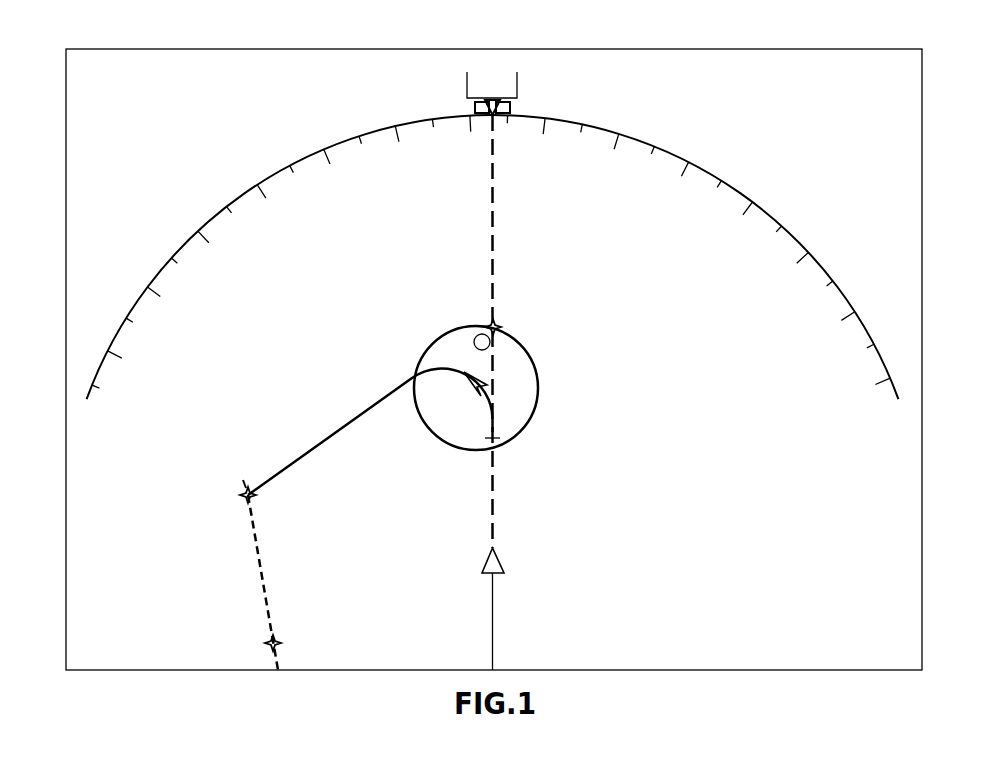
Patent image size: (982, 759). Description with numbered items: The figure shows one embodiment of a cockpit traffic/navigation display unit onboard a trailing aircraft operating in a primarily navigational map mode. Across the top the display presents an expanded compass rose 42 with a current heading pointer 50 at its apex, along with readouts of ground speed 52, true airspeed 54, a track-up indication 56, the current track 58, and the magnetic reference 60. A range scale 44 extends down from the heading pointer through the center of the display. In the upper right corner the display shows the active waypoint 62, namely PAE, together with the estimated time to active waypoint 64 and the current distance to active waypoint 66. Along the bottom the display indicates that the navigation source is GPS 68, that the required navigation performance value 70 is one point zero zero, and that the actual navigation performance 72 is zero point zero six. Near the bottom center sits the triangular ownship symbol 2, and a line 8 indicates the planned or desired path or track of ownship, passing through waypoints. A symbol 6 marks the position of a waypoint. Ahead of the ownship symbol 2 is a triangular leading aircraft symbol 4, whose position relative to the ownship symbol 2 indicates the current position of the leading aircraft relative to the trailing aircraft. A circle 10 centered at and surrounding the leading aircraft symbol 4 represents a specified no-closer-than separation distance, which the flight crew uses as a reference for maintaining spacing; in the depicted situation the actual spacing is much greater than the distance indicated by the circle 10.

The ownship symbol 2 is at (500, 562).
The leading aircraft symbol 4 is at (485, 383).
The waypoint symbol 6 is at (498, 324).
The line 8 is at (345, 425).
The circle 10 is at (489, 328).
The expanded compass rose 42 is at (633, 135).
The range scale 44 is at (494, 213).
The current heading pointer 50 is at (489, 120).
The ground speed 52 is at (117, 50).
The true airspeed 54 is at (187, 50).
The track-up indication 56 is at (458, 58).
The current track 58 is at (502, 58).
The magnetic reference 60 is at (537, 58).
The active waypoint 62 is at (868, 55).
The estimated time to active waypoint 64 is at (904, 76).
The current distance to active waypoint 66 is at (908, 128).
The GPS 68 is at (852, 662).
The required navigation performance (RNP) value 70 is at (445, 641).
The actual navigation performance (ANP) 72 is at (542, 641).